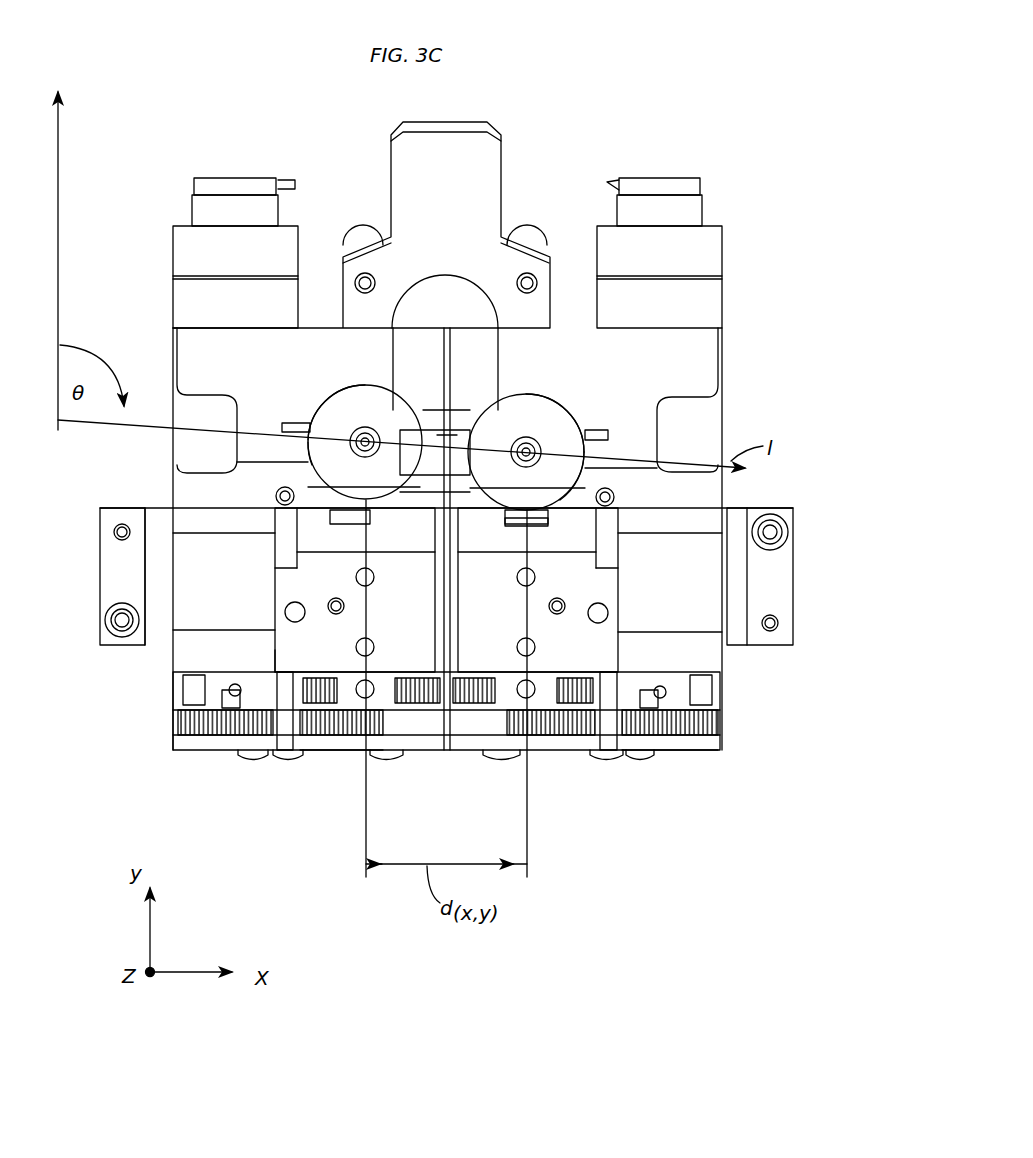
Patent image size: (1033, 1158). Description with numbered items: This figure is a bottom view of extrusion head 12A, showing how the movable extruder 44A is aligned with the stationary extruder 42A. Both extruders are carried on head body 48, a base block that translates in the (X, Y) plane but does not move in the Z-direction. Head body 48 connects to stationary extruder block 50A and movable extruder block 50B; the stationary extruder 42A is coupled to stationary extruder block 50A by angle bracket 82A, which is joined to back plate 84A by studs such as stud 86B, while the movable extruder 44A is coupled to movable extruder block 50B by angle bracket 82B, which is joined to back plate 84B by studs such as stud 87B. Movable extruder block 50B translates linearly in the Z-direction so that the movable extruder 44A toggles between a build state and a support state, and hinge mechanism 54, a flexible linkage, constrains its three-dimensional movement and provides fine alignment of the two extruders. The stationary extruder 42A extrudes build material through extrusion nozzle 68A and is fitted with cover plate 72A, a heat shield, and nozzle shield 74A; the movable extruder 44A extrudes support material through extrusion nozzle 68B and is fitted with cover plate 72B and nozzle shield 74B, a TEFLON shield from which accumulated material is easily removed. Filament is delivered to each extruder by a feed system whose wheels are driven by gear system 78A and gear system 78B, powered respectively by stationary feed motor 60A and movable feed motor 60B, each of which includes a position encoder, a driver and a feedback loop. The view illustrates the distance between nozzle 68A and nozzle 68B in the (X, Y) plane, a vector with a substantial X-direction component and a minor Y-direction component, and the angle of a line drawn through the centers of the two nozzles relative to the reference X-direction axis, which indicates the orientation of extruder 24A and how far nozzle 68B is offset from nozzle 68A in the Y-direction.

The extrusion head 12A is at (668, 93).
The extruder 24A is at (260, 650).
The stationary extruder 42A is at (330, 391).
The movable extruder 44A is at (568, 393).
The head body 48 is at (780, 604).
The stationary extruder block 50A is at (183, 676).
The movable extruder block 50B is at (705, 676).
The hinge mechanism 54 is at (439, 432).
The stationary feed motor 60A is at (173, 290).
The movable feed motor 60B is at (722, 258).
The extrusion nozzle 68A is at (365, 442).
The extrusion nozzle 68B is at (528, 450).
The cover plate 72A is at (313, 408).
The cover plate 72B is at (562, 418).
The nozzle shield 74A is at (325, 454).
The nozzle shield 74B is at (563, 412).
The gear system 78A is at (341, 762).
The gear system 78B is at (663, 764).
The angle bracket 82A is at (285, 586).
The angle bracket 82B is at (618, 588).
The back plate 84A is at (308, 487).
The back plate 84B is at (585, 488).
The stud 86B is at (343, 511).
The stud 87B is at (548, 522).